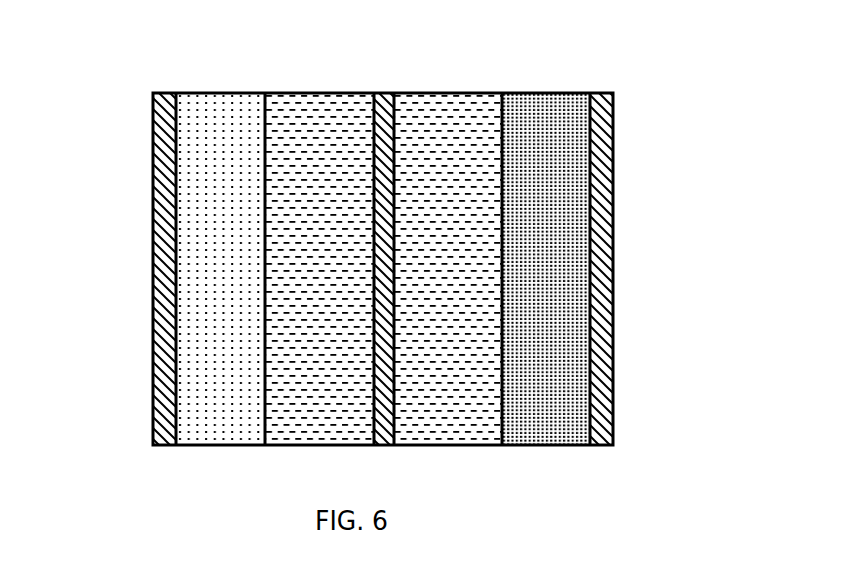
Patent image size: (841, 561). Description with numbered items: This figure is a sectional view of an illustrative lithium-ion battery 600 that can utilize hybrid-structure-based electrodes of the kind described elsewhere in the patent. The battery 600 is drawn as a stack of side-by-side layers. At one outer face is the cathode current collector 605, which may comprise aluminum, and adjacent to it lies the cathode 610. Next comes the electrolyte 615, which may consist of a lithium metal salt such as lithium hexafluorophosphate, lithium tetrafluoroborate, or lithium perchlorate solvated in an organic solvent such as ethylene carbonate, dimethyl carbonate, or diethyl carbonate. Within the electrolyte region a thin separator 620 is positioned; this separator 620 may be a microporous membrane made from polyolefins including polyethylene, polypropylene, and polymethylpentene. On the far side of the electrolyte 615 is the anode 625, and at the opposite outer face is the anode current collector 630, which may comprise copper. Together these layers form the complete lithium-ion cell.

The lithium-ion battery 600 is at (150, 79).
The cathode current collector 605 is at (160, 303).
The cathode 610 is at (207, 243).
The electrolyte 615 is at (433, 108).
The separator 620 is at (385, 108).
The anode 625 is at (566, 186).
The anode current collector 630 is at (615, 275).